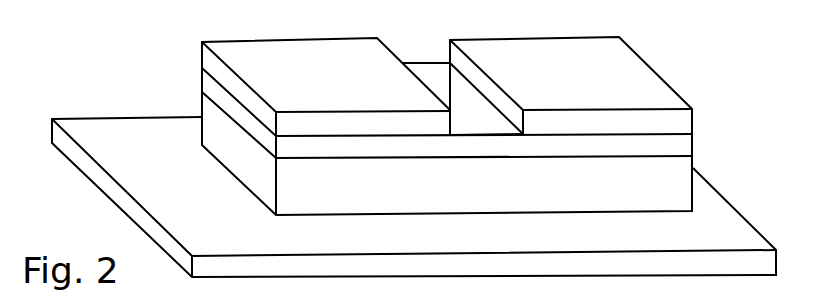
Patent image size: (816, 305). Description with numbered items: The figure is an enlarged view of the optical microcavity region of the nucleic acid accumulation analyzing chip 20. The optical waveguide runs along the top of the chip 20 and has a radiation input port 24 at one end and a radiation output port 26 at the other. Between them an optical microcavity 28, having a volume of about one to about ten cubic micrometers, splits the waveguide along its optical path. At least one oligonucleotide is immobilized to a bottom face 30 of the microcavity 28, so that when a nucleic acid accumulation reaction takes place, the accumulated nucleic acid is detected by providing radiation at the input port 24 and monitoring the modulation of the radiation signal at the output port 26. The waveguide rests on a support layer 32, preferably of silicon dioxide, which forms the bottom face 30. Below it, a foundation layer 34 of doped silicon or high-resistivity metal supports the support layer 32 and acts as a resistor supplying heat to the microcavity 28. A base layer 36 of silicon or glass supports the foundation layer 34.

The nucleic acid accumulation analyzing chip 20 is at (246, 41).
The radiation input port 24 is at (203, 61).
The radiation output port 26 is at (653, 70).
The optical microcavity 28 is at (427, 62).
The bottom face of optical microcavity 30 is at (460, 92).
The support layer 32 is at (687, 145).
The foundation layer 34 is at (685, 178).
The base layer 36 is at (733, 229).